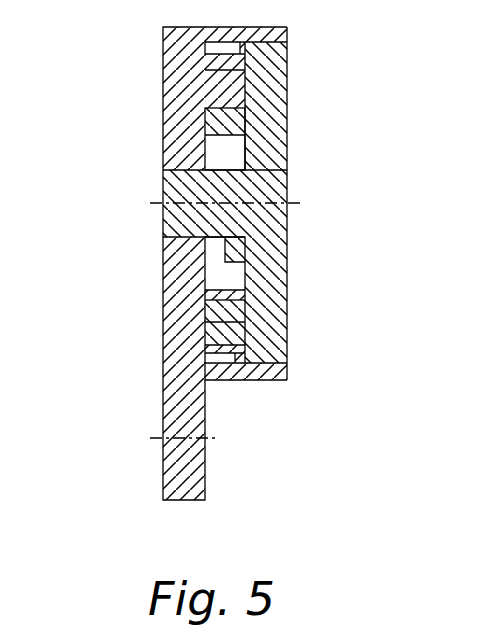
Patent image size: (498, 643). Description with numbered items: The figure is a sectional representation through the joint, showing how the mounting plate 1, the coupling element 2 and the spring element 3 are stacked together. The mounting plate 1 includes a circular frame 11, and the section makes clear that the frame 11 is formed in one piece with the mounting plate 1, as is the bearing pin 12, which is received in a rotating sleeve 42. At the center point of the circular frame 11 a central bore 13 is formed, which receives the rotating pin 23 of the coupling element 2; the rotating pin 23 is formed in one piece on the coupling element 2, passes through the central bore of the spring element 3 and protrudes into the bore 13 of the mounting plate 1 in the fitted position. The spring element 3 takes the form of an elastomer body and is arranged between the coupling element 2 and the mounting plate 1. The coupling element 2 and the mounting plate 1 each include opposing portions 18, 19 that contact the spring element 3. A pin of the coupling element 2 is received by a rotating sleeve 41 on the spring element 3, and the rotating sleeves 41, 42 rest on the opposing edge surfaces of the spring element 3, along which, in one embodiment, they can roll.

The mounting plate 1 is at (163, 470).
The coupling element 2 is at (287, 285).
The spring element 3 is at (247, 141).
The circular frame 11 is at (287, 376).
The bearing pin 12 is at (205, 82).
The central bore 13 is at (163, 237).
The opposing portion 18 is at (207, 132).
The opposing portion 19 is at (237, 262).
The rotating pin 23 is at (163, 186).
The rotating sleeve 41 is at (238, 366).
The rotating sleeve 42 is at (207, 49).